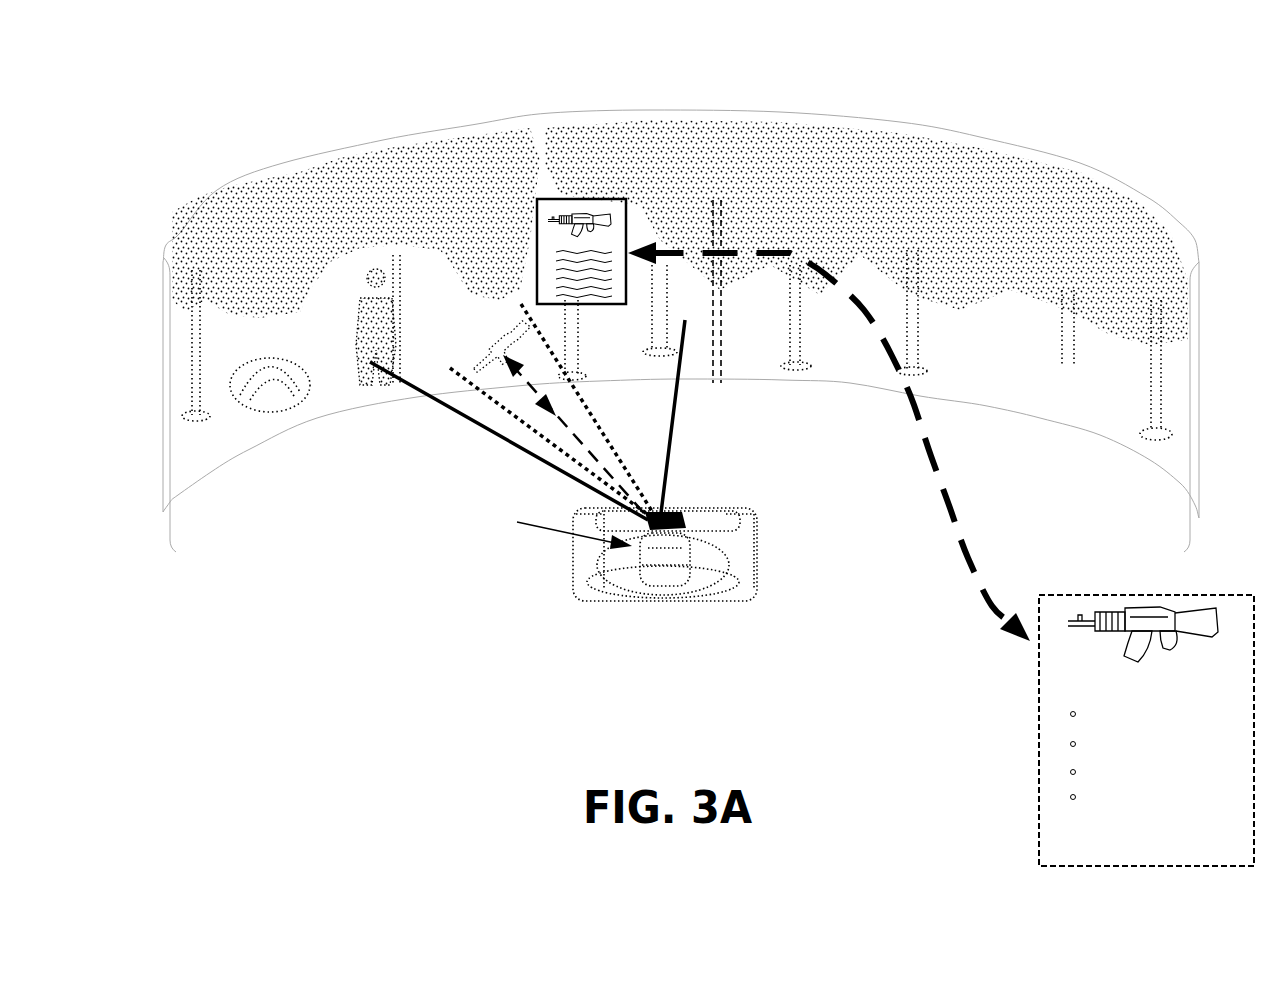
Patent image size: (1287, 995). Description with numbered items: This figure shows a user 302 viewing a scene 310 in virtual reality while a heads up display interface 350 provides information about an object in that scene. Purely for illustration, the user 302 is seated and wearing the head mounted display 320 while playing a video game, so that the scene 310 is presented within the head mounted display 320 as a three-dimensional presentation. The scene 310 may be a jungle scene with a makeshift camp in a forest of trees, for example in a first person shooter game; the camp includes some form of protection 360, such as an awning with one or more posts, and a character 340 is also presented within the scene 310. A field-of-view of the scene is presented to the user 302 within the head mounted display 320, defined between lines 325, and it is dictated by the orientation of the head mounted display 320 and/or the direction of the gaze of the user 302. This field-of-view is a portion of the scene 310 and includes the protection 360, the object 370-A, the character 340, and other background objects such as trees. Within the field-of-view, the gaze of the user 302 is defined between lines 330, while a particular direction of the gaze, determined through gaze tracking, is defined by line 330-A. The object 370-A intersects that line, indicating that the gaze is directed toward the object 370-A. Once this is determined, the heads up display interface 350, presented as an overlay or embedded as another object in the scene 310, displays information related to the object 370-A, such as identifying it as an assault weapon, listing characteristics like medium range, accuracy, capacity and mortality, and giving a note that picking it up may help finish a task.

The user 302 is at (705, 590).
The scene 310 is at (1100, 227).
The head mounted display 320 is at (517, 522).
The lines defining the field-of-view 325 is at (552, 467).
The lines defining the gaze 330 is at (487, 397).
The gaze direction line 330-A is at (548, 408).
The character 340 is at (370, 270).
The heads up display interface 350 is at (588, 197).
The protection 360 is at (687, 160).
The object 370-A is at (500, 320).